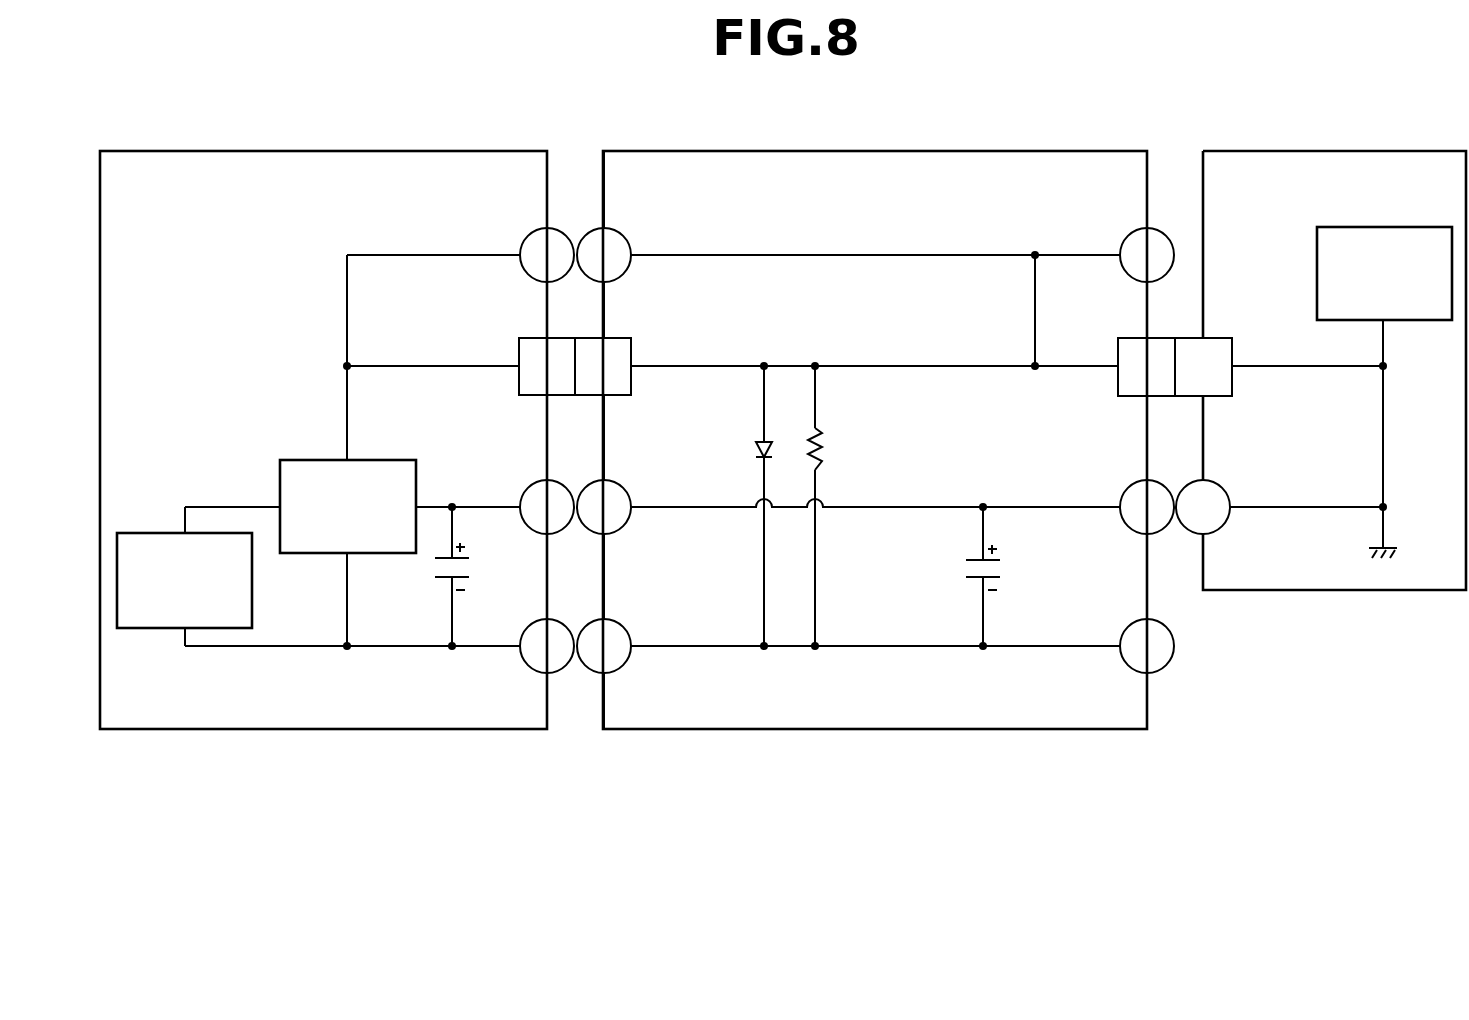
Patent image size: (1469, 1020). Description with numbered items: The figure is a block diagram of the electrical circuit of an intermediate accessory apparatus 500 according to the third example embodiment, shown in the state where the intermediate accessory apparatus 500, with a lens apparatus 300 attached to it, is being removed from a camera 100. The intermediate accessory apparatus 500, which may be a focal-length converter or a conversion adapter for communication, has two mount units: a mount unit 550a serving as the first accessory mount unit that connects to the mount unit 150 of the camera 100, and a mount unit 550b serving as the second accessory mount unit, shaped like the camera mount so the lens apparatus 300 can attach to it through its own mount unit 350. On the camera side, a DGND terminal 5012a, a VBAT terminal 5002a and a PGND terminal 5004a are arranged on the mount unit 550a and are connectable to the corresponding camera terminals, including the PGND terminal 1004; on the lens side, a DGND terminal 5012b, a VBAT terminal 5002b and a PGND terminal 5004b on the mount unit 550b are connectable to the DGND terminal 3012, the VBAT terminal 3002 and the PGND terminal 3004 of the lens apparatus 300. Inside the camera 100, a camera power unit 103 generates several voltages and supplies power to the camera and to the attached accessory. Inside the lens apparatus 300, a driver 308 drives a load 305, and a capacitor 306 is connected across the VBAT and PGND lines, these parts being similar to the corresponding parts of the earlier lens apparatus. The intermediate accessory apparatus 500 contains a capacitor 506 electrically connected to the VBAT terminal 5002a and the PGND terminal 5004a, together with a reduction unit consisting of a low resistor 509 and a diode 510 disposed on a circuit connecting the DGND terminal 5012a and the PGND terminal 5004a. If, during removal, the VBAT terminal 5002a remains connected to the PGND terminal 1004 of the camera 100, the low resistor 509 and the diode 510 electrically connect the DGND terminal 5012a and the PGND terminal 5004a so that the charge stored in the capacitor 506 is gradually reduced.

The lens apparatus 300 is at (327, 150).
The intermediate accessory apparatus 500 is at (877, 150).
The camera 100 is at (1339, 150).
The camera power unit 103 is at (1317, 273).
The mount unit 150 is at (1232, 388).
The PGND terminal 1004 is at (1220, 534).
The load 305 is at (153, 532).
The capacitor 306 is at (443, 580).
The driver 308 is at (309, 555).
The mount unit 350 is at (519, 386).
The VBAT terminal 3002 is at (527, 484).
The PGND terminal 3004 is at (527, 673).
The DGND terminal 3012 is at (527, 279).
The capacitor 506 is at (975, 580).
The low resistor 509 is at (822, 455).
The diode 510 is at (755, 450).
The mount unit 550a is at (1118, 388).
The mount unit 550b is at (631, 386).
The VBAT terminal 5002a is at (1128, 534).
The VBAT terminal 5002b is at (623, 534).
The PGND terminal 5004a is at (1128, 673).
The PGND terminal 5004b is at (657, 699).
The DGND terminal 5012a is at (1127, 280).
The DGND terminal 5012b is at (653, 210).